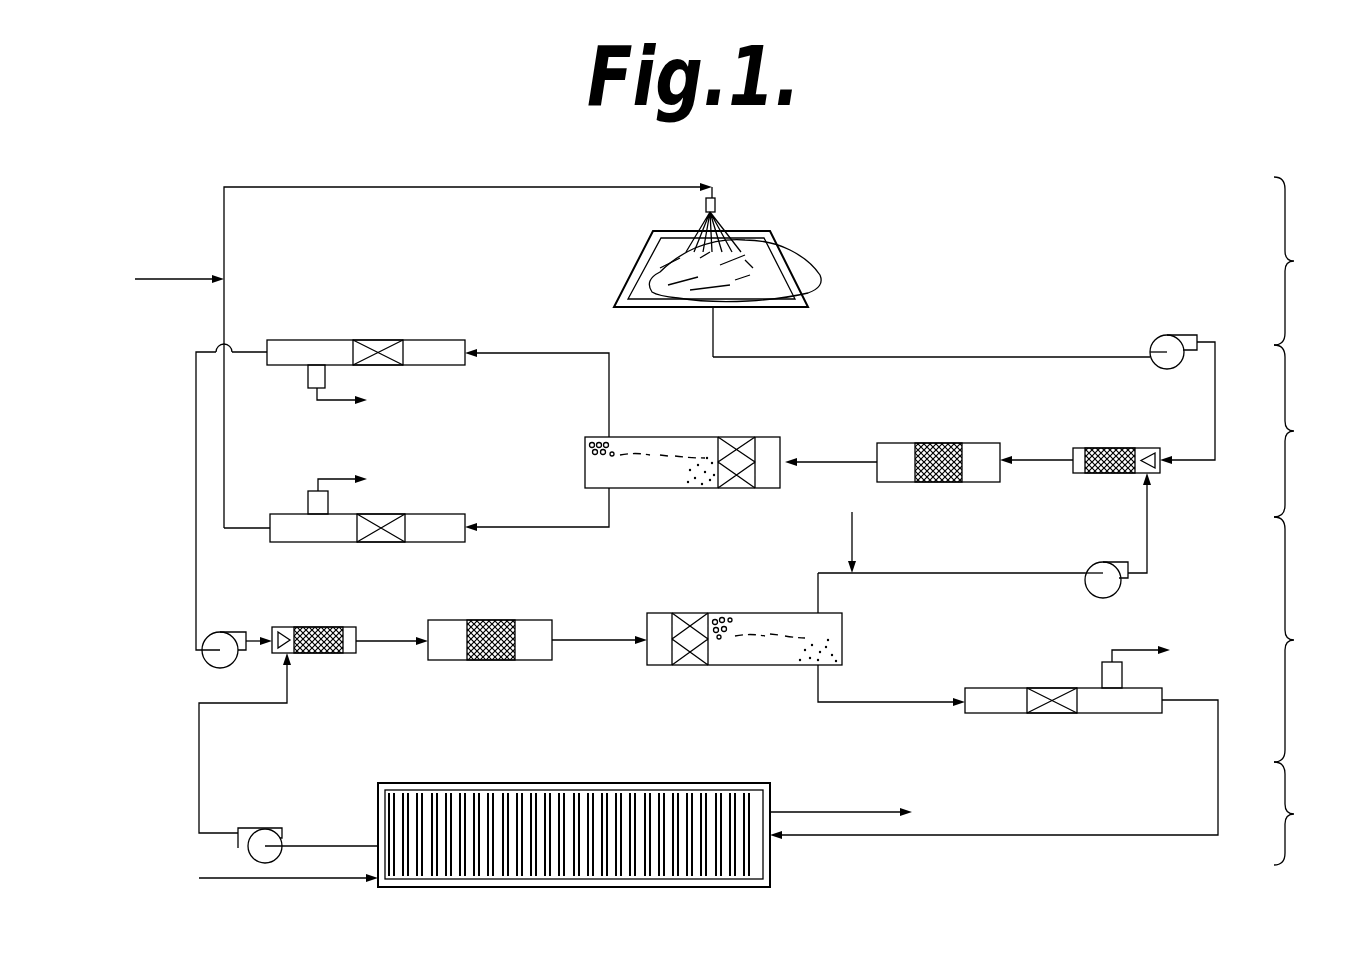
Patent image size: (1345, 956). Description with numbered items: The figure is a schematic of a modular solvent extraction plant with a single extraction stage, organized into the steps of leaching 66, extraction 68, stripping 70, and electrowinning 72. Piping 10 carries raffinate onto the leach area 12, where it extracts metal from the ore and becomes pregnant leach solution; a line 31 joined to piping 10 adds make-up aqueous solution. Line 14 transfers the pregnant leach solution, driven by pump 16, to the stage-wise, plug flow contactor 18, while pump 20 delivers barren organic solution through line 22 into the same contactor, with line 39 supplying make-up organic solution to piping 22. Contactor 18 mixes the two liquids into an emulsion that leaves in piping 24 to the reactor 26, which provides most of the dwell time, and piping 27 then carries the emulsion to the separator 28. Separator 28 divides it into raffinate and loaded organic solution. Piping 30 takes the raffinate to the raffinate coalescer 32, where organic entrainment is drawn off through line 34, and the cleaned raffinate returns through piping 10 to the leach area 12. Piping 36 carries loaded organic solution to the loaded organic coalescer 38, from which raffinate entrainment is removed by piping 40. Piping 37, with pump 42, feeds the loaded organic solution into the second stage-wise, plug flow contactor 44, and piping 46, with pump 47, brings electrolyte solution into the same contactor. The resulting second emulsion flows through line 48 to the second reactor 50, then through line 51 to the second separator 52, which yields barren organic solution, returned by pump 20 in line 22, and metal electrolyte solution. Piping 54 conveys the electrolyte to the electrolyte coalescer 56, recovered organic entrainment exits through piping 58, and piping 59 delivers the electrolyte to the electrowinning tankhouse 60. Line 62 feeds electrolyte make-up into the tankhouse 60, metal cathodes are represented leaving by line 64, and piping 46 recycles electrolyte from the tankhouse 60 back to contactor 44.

The piping 10 is at (462, 187).
The leach area 12 is at (766, 264).
The line 14 is at (896, 351).
The pump 16 is at (1167, 337).
The stage-wise, plug flow contactor 18 is at (1100, 448).
The pump 20 is at (1096, 562).
The line 22 is at (923, 572).
The piping 24 is at (1056, 462).
The reactor 26 is at (935, 443).
The piping 27 is at (847, 462).
The separator 28 is at (652, 412).
The piping 30 is at (569, 529).
The line 31 is at (187, 275).
The raffinate coalescer 32 is at (330, 542).
The line 34 is at (337, 476).
The piping 36 is at (562, 352).
The piping 37 is at (196, 422).
The loaded organic coalescer 38 is at (323, 340).
The line 39 is at (847, 530).
The piping 40 is at (328, 401).
The pump 42 is at (222, 632).
The second stage-wise, plug flow contactor 44 is at (310, 627).
The piping 46 is at (243, 703).
The pump 47 is at (262, 827).
The line 48 is at (380, 640).
The second reactor 50 is at (506, 662).
The line 51 is at (602, 638).
The second separator 52 is at (714, 613).
The piping 54 is at (905, 703).
The electrolyte coalescer 56 is at (1030, 713).
The piping 58 is at (1133, 655).
The piping 59 is at (1070, 835).
The electrowinning tankhouse 60 is at (602, 783).
The line 62 is at (212, 876).
The line 64 is at (844, 812).
The leaching 66 is at (1306, 261).
The extraction 68 is at (1306, 431).
The stripping 70 is at (1306, 639).
The electrowinning 72 is at (1306, 813).